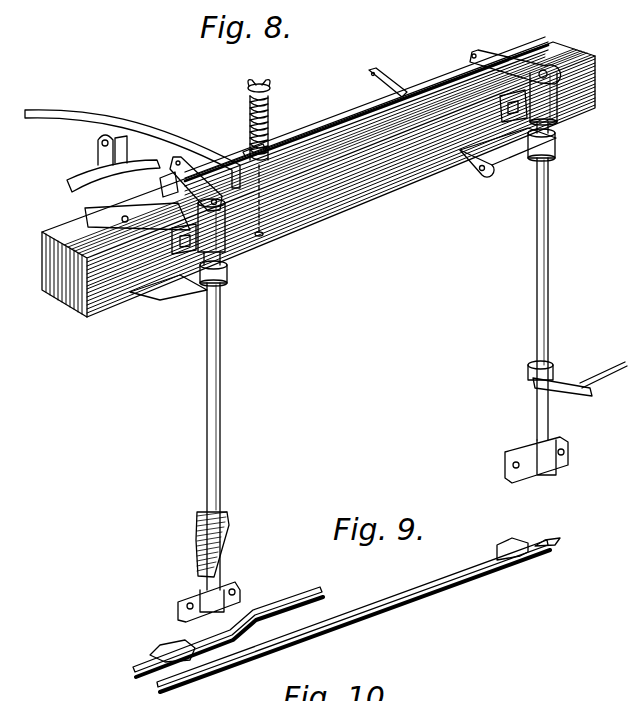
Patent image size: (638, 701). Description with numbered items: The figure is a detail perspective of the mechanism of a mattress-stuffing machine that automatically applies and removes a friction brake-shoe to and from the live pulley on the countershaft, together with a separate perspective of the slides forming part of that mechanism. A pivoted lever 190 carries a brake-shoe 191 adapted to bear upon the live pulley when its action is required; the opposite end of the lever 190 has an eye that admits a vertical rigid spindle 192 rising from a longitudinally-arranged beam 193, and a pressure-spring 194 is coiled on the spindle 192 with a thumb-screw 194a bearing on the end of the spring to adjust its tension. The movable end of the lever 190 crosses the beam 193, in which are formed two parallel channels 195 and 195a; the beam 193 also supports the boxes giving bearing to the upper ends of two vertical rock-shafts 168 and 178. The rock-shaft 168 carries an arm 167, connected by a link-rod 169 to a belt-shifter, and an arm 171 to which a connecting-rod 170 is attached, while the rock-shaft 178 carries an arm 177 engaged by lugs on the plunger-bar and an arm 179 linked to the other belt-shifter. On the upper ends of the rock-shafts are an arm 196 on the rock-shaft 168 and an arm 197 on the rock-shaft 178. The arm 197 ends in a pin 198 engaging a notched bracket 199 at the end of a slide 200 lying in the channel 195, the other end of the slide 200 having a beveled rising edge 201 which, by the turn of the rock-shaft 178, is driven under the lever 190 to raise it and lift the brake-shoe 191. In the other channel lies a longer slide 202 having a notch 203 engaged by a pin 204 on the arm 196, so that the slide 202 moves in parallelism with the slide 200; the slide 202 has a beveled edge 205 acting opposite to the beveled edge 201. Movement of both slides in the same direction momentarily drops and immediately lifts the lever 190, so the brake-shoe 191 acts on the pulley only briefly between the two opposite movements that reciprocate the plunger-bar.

In FIG. 8, the arm 167 is at (510, 170).
In FIG. 8, the vertical rock-shaft 168 is at (564, 299).
In FIG. 8, the link-rod 169 is at (392, 90).
In FIG. 8, the connecting-rod 170 is at (608, 378).
In FIG. 8, the arm 171 is at (580, 398).
In FIG. 8, the arm 177 is at (226, 542).
In FIG. 8, the rock-shaft 178 is at (236, 436).
In FIG. 8, the arm 179 is at (174, 298).
In FIG. 8, the lever 190 is at (132, 136).
In FIG. 8, the brake-shoe 191 is at (95, 163).
In FIG. 8, the spindle 192 is at (272, 180).
In FIG. 8, the beam 193 is at (318, 179).
In FIG. 8, the pressure-spring 194 is at (272, 96).
In FIG. 8, the thumb-screw 194a is at (244, 76).
In FIG. 8, the channel 195 is at (340, 118).
In FIG. 8, the channel 195a is at (350, 137).
In FIG. 8, the arm 196 is at (505, 62).
In FIG. 8, the arm 197 is at (190, 168).
In FIG. 8, the pin 198 is at (161, 168).
In FIG. 9, the notched bracket 199 is at (170, 645).
In FIG. 8, the slide 200 is at (275, 128).
In FIG. 9, the slide 200 is at (228, 625).
In FIG. 9, the beveled rising edge 201 is at (250, 612).
In FIG. 9, the longer slide 202 is at (353, 616).
In FIG. 9, the notch 203 is at (528, 537).
In FIG. 8, the pin 204 is at (472, 56).
In FIG. 9, the beveled edge 205 is at (215, 668).